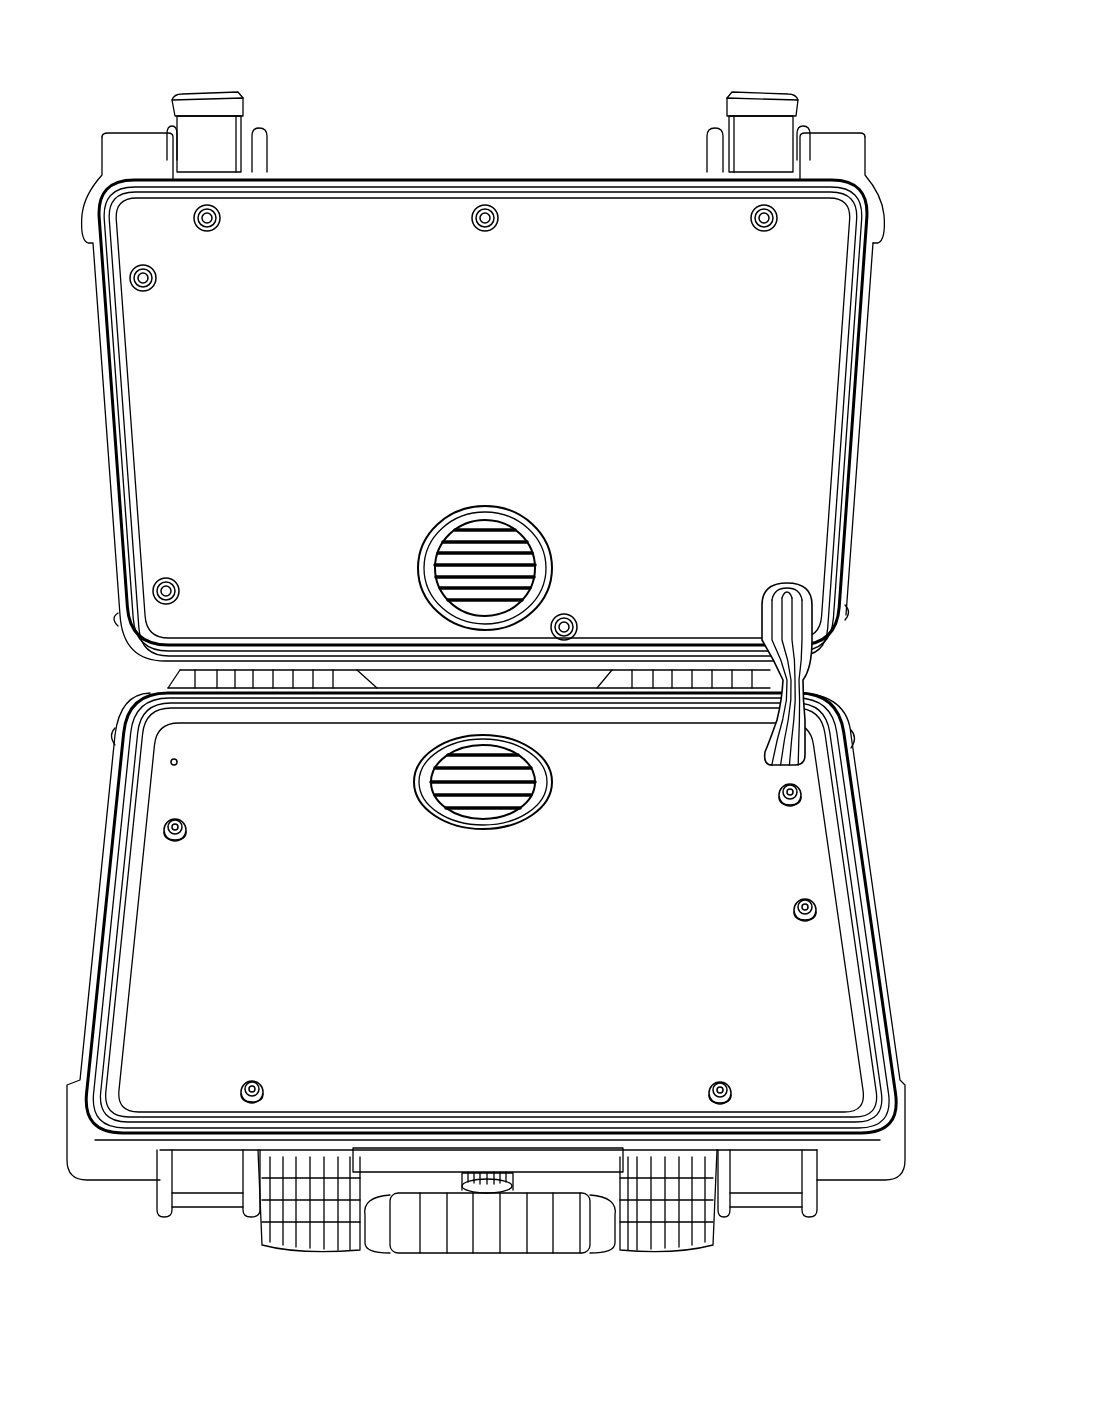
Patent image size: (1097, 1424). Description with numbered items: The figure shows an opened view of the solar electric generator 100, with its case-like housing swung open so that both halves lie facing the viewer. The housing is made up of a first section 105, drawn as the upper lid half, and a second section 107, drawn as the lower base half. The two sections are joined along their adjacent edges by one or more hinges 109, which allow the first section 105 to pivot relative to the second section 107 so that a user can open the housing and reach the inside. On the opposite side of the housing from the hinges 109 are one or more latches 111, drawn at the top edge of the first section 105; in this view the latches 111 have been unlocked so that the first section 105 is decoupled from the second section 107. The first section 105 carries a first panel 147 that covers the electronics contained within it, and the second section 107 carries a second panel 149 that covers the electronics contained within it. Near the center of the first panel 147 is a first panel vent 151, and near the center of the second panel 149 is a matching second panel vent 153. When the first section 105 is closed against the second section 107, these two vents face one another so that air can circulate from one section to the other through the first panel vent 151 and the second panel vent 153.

The solar electric generator 100 is at (873, 63).
The first section 105 is at (862, 399).
The second section 107 is at (862, 858).
The hinges 109 is at (228, 680).
The latches 111 is at (212, 96).
The first panel 147 is at (165, 407).
The second panel 149 is at (167, 898).
The first panel vent 151 is at (480, 506).
The second panel vent 153 is at (487, 833).